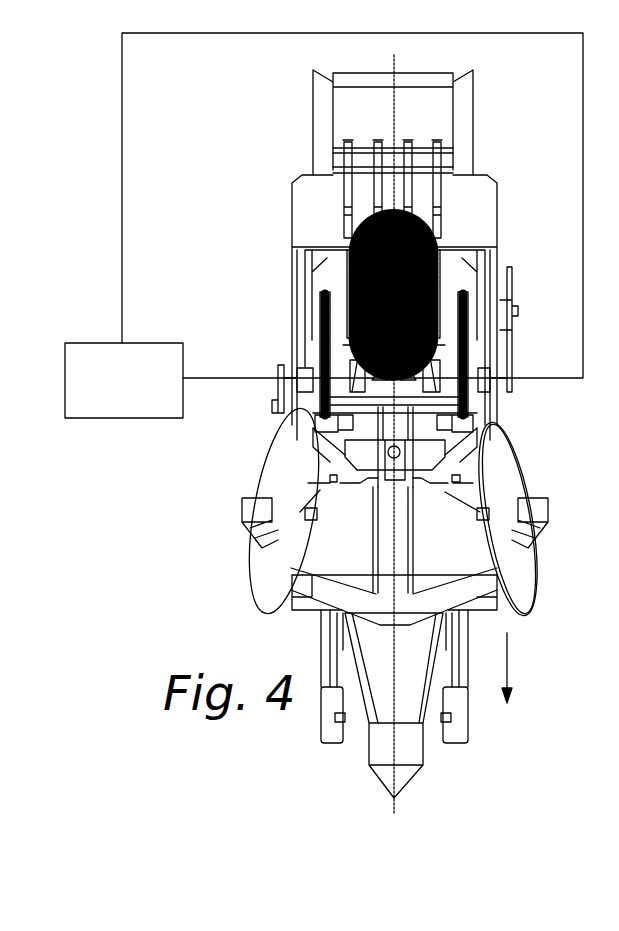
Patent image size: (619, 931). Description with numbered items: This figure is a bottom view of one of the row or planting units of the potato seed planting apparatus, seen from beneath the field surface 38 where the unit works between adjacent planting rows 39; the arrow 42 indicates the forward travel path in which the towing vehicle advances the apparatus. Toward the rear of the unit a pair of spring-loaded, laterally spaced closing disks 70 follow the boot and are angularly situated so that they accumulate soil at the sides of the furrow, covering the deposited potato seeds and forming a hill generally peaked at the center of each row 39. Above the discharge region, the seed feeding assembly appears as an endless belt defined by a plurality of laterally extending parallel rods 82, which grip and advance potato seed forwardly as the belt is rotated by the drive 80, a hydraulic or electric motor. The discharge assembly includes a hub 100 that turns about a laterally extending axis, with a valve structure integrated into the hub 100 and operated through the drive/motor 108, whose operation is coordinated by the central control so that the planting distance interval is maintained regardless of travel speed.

The hub 100 is at (109, 408).
The parallel rods 82 is at (447, 252).
The drive 80 is at (480, 355).
The drive/motor 108 is at (296, 334).
The closing disks 70 is at (270, 470).
The field surface 38 is at (289, 773).
The planting rows 39 is at (398, 802).
The arrow 42 is at (512, 660).